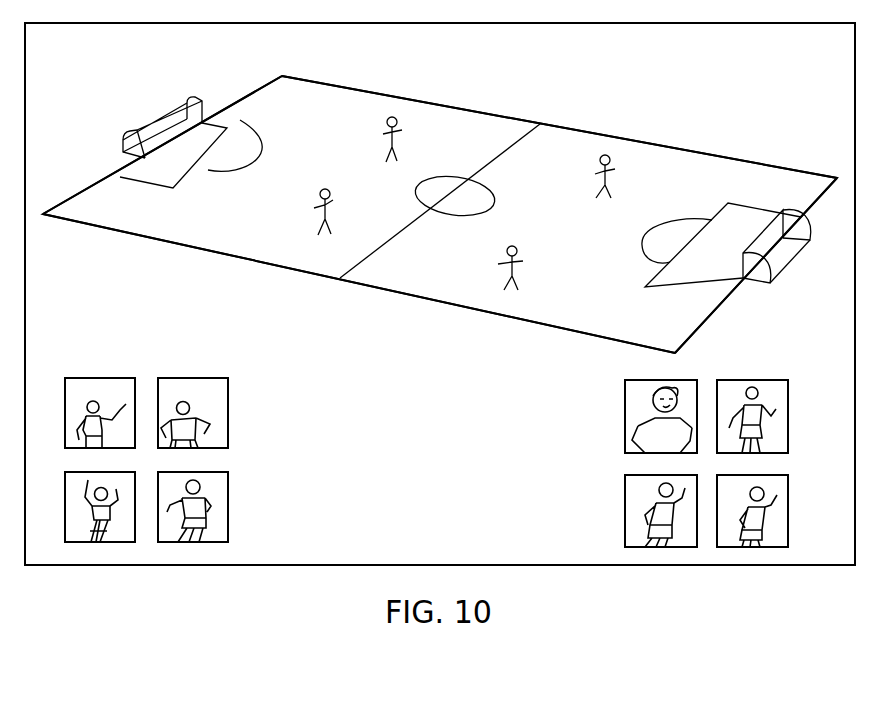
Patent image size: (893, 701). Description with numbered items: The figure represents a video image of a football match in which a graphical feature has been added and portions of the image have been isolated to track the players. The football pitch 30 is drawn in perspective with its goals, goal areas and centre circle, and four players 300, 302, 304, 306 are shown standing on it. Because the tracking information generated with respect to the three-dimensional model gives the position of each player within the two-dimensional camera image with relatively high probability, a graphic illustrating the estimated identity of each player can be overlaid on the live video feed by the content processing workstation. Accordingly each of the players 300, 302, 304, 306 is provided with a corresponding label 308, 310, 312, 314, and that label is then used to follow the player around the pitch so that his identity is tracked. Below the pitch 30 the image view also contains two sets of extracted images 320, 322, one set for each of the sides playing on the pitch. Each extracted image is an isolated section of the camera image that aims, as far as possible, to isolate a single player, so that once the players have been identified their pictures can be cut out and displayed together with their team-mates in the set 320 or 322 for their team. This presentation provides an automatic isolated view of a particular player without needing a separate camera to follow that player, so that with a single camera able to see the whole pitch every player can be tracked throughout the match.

The football pitch 30 is at (140, 213).
The player 300 is at (383, 134).
The player 302 is at (314, 208).
The player 304 is at (498, 264).
The player 306 is at (595, 174).
The label 308 is at (461, 113).
The label 310 is at (370, 215).
The label 312 is at (577, 292).
The label 314 is at (678, 161).
The set of extracted images 320 is at (252, 378).
The set of extracted images 322 is at (607, 382).